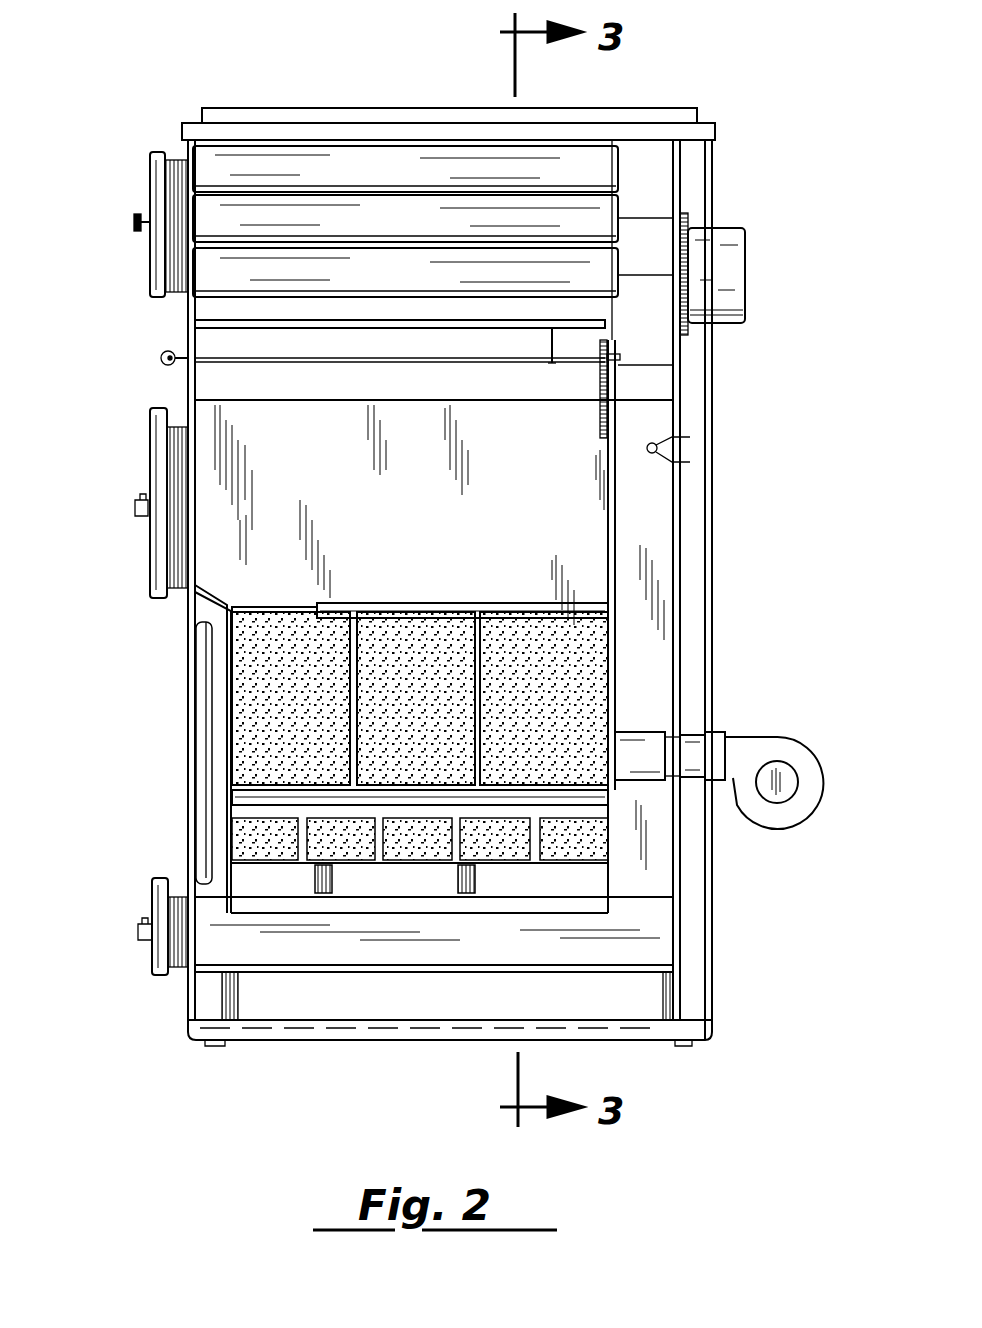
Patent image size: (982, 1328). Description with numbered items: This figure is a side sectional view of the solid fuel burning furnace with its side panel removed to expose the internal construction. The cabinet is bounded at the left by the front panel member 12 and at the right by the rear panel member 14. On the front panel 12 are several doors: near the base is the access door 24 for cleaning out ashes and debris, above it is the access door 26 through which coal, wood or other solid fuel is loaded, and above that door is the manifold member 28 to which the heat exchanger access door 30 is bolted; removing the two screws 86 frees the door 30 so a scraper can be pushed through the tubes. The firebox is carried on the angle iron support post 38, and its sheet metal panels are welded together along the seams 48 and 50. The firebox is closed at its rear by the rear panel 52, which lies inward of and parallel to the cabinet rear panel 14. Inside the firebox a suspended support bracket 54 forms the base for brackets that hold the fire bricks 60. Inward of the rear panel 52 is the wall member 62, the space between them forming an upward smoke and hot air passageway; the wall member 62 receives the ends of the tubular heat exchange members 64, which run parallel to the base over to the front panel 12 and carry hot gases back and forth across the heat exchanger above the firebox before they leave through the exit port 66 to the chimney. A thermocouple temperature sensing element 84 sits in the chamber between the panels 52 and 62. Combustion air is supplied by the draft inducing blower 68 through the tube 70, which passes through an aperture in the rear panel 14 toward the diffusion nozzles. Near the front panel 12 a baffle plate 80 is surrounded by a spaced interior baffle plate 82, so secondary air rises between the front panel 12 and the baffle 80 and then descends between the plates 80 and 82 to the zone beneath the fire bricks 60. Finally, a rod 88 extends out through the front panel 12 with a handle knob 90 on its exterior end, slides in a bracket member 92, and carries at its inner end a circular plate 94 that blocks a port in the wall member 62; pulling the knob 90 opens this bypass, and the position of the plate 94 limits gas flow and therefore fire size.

The front panel member 12 is at (188, 388).
The rear panel member 14 is at (714, 381).
The access door 24 is at (150, 955).
The access door 26 is at (150, 545).
The manifold member 28 is at (183, 150).
The heat exchanger access door 30 is at (150, 276).
The angle iron support post 38 is at (680, 992).
The seam 48 is at (376, 975).
The seam 50 is at (355, 330).
The rear panel 52 is at (681, 575).
The support bracket 54 is at (478, 882).
The fire bricks 60 is at (279, 851).
The wall member 62 is at (606, 531).
The tubular heat exchange members 64 is at (401, 184).
The exit port 66 is at (733, 228).
The draft inducing blower 68 is at (805, 752).
The tube 70 is at (722, 737).
The baffle plate 80 is at (207, 752).
The interior baffle plate 82 is at (226, 686).
The thermocouple temperature sensing element 84 is at (690, 448).
The screws 86 is at (133, 222).
The rod 88 is at (256, 363).
The handle knob 90 is at (162, 354).
The bracket member 92 is at (548, 365).
The circular plate 94 is at (599, 417).